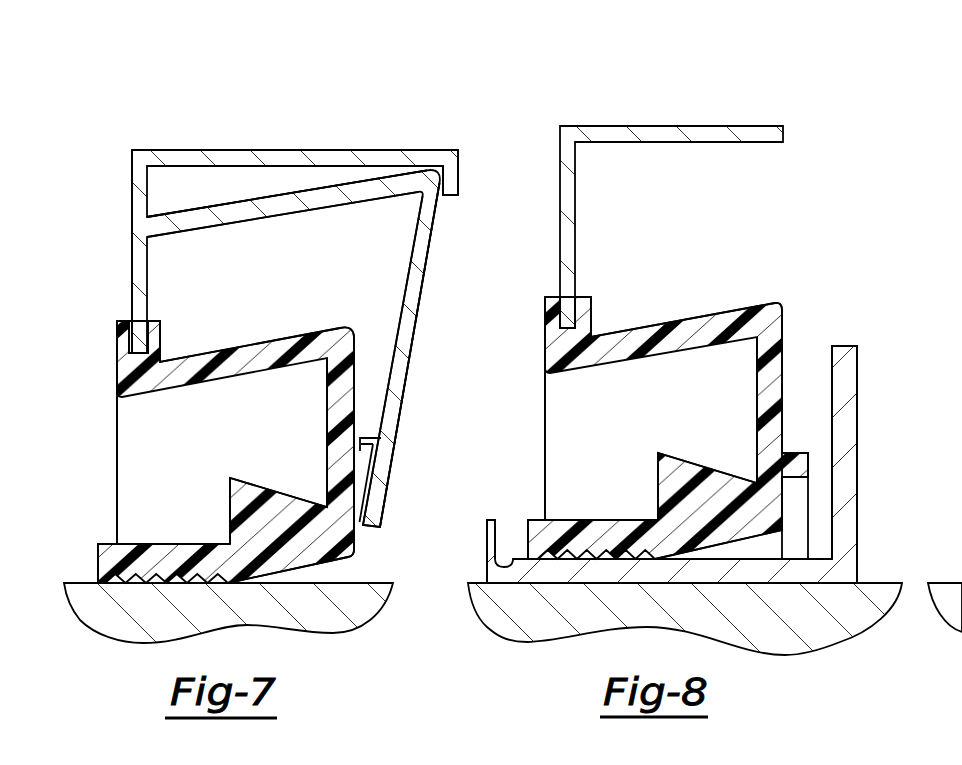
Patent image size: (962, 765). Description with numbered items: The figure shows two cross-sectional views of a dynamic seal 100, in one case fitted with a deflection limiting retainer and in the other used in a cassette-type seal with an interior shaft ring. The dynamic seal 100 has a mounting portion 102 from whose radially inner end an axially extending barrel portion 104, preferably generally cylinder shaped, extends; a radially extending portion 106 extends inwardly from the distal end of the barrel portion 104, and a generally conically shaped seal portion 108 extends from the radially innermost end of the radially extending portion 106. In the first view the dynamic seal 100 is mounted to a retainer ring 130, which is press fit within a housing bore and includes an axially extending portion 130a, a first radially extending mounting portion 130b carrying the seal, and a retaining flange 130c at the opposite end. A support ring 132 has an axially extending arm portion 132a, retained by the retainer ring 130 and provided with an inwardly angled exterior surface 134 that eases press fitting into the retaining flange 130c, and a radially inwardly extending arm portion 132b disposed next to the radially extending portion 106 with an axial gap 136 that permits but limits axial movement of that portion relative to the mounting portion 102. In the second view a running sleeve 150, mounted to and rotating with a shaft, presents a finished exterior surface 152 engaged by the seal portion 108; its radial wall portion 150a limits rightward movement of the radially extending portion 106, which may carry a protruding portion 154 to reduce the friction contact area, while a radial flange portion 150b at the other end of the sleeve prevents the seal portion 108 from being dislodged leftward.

In FIG. 7, the dynamic seal 100 is at (358, 282).
In FIG. 8, the dynamic seal 100 is at (794, 272).
In FIG. 7, the mounting portion 102 is at (118, 338).
In FIG. 8, the mounting portion 102 is at (583, 312).
In FIG. 7, the axially extending barrel portion 104 is at (215, 352).
In FIG. 8, the axially extending barrel portion 104 is at (716, 322).
In FIG. 7, the radially extending portion 106 is at (327, 402).
In FIG. 8, the radially extending portion 106 is at (783, 398).
In FIG. 7, the seal portion 108 is at (178, 580).
In FIG. 8, the seal portion 108 is at (596, 519).
In FIG. 7, the retainer ring 130 is at (134, 183).
In FIG. 8, the retainer ring 130 is at (653, 126).
In FIG. 7, the axially extending portion 130a is at (301, 158).
In FIG. 7, the first radially extending mounting portion 130b is at (134, 268).
In FIG. 7, the retaining flange 130c is at (460, 172).
In FIG. 7, the support ring 132 is at (440, 262).
In FIG. 7, the axially extending arm portion 132a is at (258, 214).
In FIG. 7, the radially inwardly extending arm portion 132b is at (402, 370).
In FIG. 7, the inwardly angled exterior surface 134 is at (205, 208).
In FIG. 7, the gap 136 is at (385, 426).
In FIG. 8, the running sleeve 150 is at (805, 572).
In FIG. 8, the radial wall portion 150a is at (843, 437).
In FIG. 8, the radial flange portion 150b is at (488, 527).
In FIG. 8, the finished exterior surface 152 is at (790, 540).
In FIG. 8, the protruding portion 154 is at (794, 458).